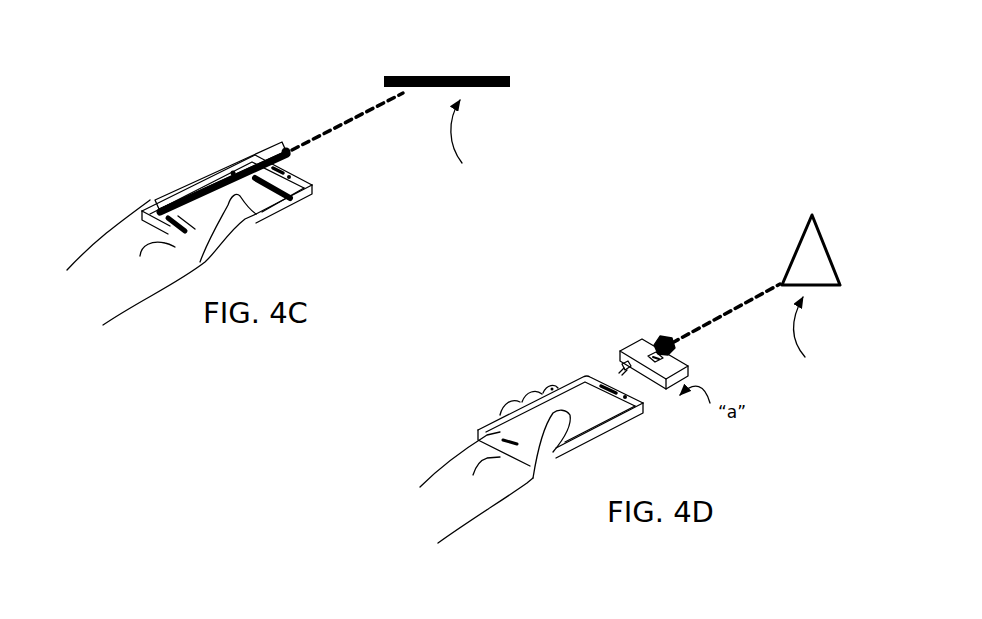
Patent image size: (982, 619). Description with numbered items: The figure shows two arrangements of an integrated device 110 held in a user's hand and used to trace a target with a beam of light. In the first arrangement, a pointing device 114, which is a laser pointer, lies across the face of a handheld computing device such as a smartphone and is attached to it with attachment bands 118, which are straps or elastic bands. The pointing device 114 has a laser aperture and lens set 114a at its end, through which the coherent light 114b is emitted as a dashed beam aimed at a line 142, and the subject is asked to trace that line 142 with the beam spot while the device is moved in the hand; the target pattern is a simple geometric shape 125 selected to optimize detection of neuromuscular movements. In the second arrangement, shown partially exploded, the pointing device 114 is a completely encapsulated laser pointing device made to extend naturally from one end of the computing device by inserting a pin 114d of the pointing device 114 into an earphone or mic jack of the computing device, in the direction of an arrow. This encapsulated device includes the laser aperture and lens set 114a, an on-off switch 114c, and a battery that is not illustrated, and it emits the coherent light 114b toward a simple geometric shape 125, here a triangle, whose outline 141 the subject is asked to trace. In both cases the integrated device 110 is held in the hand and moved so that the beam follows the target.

In FIG. 4C, the integrated device 110 is at (198, 120).
In FIG. 4D, the integrated device 110 is at (500, 367).
In FIG. 4C, the pointing device 114 is at (192, 185).
In FIG. 4D, the pointing device 114 is at (622, 350).
In FIG. 4C, the laser aperture and lens set 114a is at (287, 150).
In FIG. 4D, the laser aperture and lens set 114a is at (662, 340).
In FIG. 4C, the coherent light 114b is at (352, 120).
In FIG. 4D, the coherent light 114b is at (730, 310).
In FIG. 4D, the on-off switch 114c is at (686, 362).
In FIG. 4D, the pin 114d is at (622, 363).
In FIG. 4C, the attachment bands 118 is at (160, 198).
In FIG. 4C, the simple geometric shape 125 is at (469, 145).
In FIG. 4D, the simple geometric shape 125 is at (811, 341).
In FIG. 4D, the outline 141 is at (804, 233).
In FIG. 4C, the line 142 is at (493, 77).